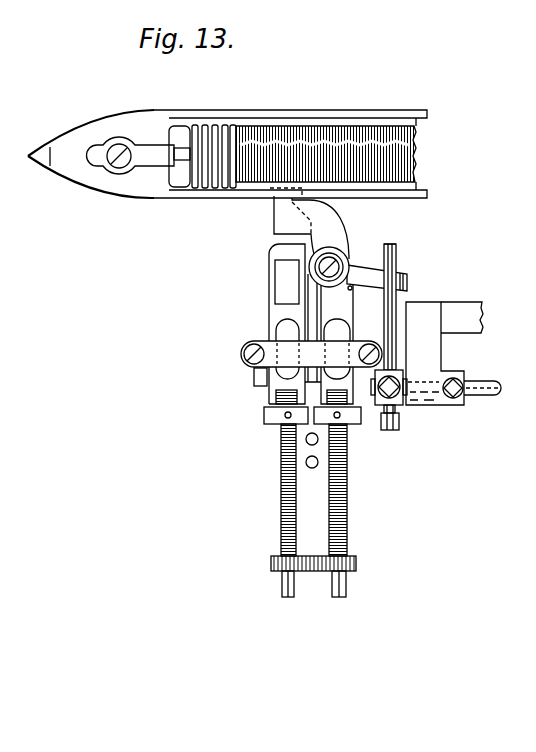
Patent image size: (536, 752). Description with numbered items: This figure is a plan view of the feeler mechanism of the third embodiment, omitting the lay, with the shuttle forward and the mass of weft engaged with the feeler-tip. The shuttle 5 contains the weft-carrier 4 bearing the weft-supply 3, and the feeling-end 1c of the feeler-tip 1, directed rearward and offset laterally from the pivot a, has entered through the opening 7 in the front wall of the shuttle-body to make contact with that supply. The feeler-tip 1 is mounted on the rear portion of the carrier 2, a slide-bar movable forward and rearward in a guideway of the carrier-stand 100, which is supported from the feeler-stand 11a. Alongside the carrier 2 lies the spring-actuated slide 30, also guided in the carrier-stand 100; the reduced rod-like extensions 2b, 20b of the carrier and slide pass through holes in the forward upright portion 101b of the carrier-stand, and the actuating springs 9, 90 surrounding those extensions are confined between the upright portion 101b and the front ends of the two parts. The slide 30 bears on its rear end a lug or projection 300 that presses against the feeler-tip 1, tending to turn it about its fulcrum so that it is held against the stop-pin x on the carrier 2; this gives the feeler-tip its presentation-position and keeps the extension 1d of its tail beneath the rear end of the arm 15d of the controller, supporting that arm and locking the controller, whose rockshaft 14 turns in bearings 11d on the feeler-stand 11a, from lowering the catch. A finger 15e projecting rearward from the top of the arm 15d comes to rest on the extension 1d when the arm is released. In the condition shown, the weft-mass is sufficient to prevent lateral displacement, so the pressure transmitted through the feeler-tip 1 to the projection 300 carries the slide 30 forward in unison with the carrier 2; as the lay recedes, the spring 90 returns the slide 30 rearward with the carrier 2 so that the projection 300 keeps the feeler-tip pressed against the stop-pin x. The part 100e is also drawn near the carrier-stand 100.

The weft-supply 3 is at (323, 128).
The weft-carrier 4 is at (230, 126).
The shuttle 5 is at (158, 195).
The opening 7 is at (348, 187).
The feeler-tip 1 is at (273, 210).
The feeling-end 1c is at (268, 190).
The extension 1d is at (404, 279).
The lug or projection 300 is at (268, 256).
The slide 30 is at (265, 302).
The carrier 2 is at (348, 304).
The pivot a is at (344, 249).
The stop-pin x is at (348, 286).
The arm 15d is at (393, 310).
The finger 15e is at (393, 241).
The feeler-stand 11a is at (461, 330).
The bearings 11d is at (422, 402).
The rockshaft 14 is at (487, 389).
The carrier-stand 100 is at (255, 375).
The cross bar tab 100e is at (250, 372).
The spring 90 is at (277, 488).
The spring 9 is at (344, 505).
The forward upright portion 101b is at (268, 560).
The rod-like extension 20b is at (283, 595).
The rod-like extension 2b is at (352, 605).